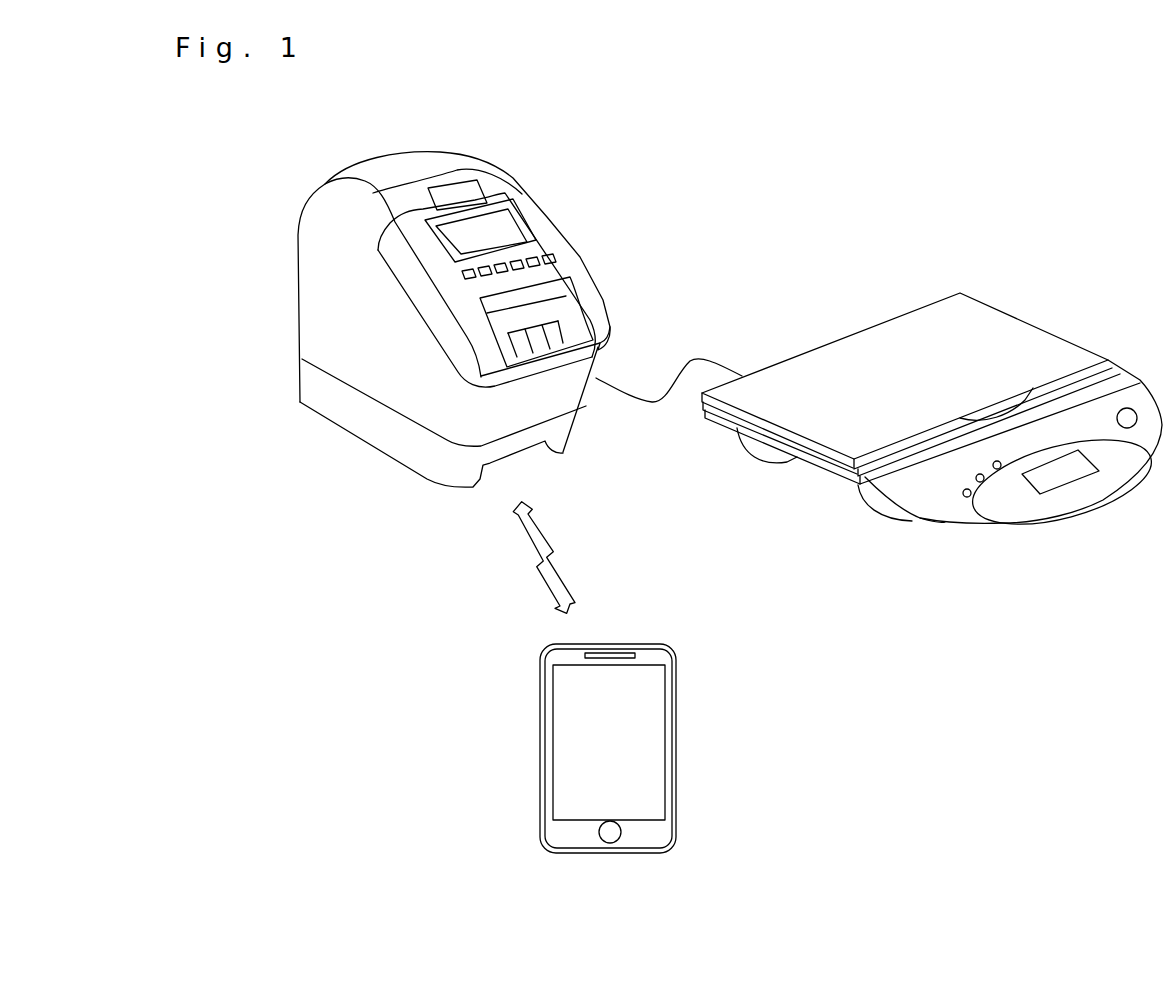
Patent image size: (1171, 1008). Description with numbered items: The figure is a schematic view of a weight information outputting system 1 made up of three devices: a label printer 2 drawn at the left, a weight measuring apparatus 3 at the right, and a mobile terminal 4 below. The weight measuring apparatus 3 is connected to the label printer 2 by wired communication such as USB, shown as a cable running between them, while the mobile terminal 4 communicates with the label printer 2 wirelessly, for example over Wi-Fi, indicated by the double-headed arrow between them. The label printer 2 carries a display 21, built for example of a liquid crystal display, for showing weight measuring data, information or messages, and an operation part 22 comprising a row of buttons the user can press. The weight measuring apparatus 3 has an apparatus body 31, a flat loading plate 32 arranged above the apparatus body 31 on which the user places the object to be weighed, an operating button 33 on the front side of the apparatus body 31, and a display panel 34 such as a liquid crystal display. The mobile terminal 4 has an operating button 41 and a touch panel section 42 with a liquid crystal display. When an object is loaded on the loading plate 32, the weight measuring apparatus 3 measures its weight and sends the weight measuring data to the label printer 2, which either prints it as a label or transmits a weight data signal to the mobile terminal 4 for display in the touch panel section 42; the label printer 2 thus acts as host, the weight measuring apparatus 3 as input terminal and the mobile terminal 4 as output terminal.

The weight information outputting system 1 is at (998, 236).
The label printer 2 is at (295, 246).
The display 21 is at (513, 222).
The operation part 22 is at (556, 254).
The weight measuring apparatus 3 is at (1032, 313).
The apparatus body 31 is at (775, 452).
The loading plate 32 is at (899, 340).
The operating button 33 is at (966, 497).
The display panel 34 is at (1055, 475).
The mobile terminal 4 is at (702, 693).
The operating button 41 is at (615, 832).
The touch panel section 42 is at (577, 765).